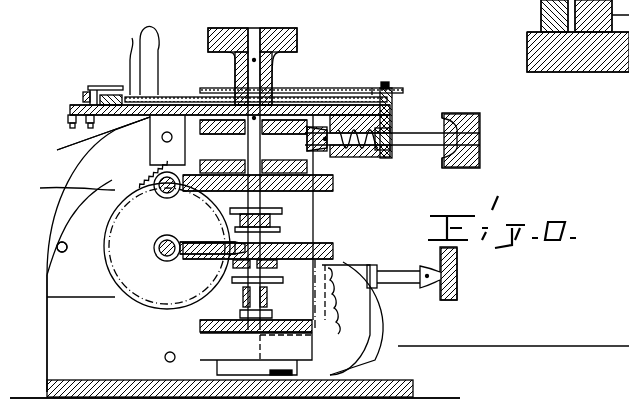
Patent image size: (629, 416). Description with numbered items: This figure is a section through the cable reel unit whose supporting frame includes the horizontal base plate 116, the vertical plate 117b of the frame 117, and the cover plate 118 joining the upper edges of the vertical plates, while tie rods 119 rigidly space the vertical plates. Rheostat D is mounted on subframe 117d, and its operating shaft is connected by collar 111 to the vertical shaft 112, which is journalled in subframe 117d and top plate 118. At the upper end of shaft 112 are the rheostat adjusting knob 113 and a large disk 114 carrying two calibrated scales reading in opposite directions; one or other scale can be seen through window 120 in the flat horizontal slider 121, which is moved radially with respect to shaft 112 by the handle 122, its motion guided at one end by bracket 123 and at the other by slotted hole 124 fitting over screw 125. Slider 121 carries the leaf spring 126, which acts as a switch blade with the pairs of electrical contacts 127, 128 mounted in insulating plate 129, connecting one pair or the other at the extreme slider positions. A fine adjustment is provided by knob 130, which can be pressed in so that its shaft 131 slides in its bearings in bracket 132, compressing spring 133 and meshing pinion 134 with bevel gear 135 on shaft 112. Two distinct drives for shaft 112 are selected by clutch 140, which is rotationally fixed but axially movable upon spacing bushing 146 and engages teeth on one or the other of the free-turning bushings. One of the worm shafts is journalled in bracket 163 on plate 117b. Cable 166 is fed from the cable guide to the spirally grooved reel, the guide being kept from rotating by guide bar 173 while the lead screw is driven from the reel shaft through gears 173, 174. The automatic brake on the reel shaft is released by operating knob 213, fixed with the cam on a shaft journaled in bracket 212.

The collar 111 is at (203, 312).
The vertical shaft 112 is at (290, 215).
The rheostat adjusting knob 113 is at (300, 95).
The large disk 114 is at (300, 90).
The horizontal base plate 116 is at (400, 370).
The frame 117 is at (235, 407).
The vertical plate 117b is at (58, 278).
The subframe 117d is at (218, 305).
The cover plate 118 is at (400, 115).
The tie rods 119 is at (62, 242).
The window 120 is at (372, 88).
The flat horizontal slider 121 is at (325, 95).
The handle 122 is at (158, 32).
The bracket 123 is at (388, 95).
The slotted hole 124 is at (132, 40).
The screw 125 is at (118, 95).
The leaf spring 126 is at (88, 88).
The electrical contacts 127 is at (83, 98).
The electrical contacts 128 is at (73, 115).
The insulating plate 129 is at (85, 128).
The knob 130 is at (480, 118).
The shaft 131 is at (415, 135).
The bracket 132 is at (385, 158).
The spring 133 is at (378, 150).
The pinion 134 is at (352, 155).
The bevel gear 135 is at (215, 140).
The clutch 140 is at (285, 228).
The spacing bushing 146 is at (235, 205).
The bracket 163 is at (155, 180).
The cable 166 is at (530, 346).
The guide bar 173 is at (58, 243).
The gear 174 is at (340, 318).
The bracket 212 is at (355, 338).
The operating knob 213 is at (455, 276).
The rheostat D is at (200, 342).